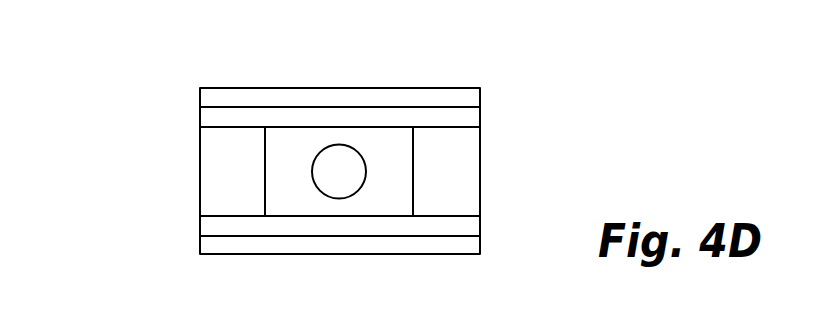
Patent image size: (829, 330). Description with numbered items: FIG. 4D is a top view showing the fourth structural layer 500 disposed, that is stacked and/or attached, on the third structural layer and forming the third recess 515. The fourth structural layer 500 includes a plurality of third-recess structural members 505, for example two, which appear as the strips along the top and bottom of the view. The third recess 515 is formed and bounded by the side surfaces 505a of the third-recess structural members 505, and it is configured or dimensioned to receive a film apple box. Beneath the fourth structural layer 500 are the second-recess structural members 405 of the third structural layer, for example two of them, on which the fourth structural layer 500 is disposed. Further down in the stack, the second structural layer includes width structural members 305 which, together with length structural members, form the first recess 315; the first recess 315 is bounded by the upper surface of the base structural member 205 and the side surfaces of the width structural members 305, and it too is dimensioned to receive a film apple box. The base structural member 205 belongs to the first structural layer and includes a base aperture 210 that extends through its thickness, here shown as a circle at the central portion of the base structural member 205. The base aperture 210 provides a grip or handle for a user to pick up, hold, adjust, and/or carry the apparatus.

The fourth structural layer 500 is at (176, 77).
The third-recess structural member 505 is at (385, 100).
The side surface 505a is at (214, 109).
The second-recess structural member 405 is at (460, 117).
The width structural member 305 is at (225, 175).
The base structural member 205 is at (393, 197).
The base aperture 210 is at (342, 159).
The first recess 315 is at (298, 146).
The third recess 515 is at (337, 105).